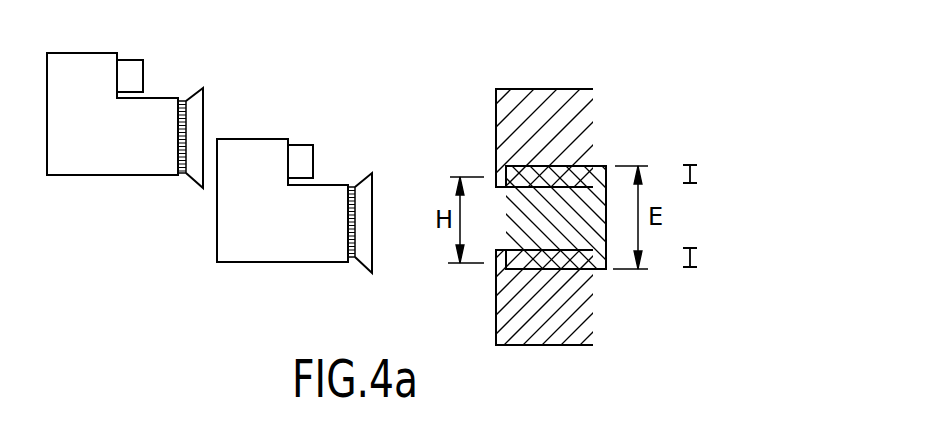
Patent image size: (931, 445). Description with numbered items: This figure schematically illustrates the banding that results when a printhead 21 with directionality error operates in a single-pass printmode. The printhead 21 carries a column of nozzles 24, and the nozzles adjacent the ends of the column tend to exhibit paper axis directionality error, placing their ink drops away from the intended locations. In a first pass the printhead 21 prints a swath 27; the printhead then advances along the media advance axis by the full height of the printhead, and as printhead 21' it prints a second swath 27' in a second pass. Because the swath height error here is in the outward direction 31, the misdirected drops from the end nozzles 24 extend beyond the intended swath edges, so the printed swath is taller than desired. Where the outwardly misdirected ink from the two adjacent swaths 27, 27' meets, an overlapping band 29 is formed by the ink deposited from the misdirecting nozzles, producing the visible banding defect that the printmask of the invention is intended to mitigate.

The printhead 21 is at (112, 114).
The printhead 21' is at (282, 200).
The nozzles 24 is at (178, 130).
The swath 27 is at (665, 177).
The second swath 27' is at (639, 266).
The overlapping band 29 is at (695, 175).
The outward direction 31 is at (203, 110).